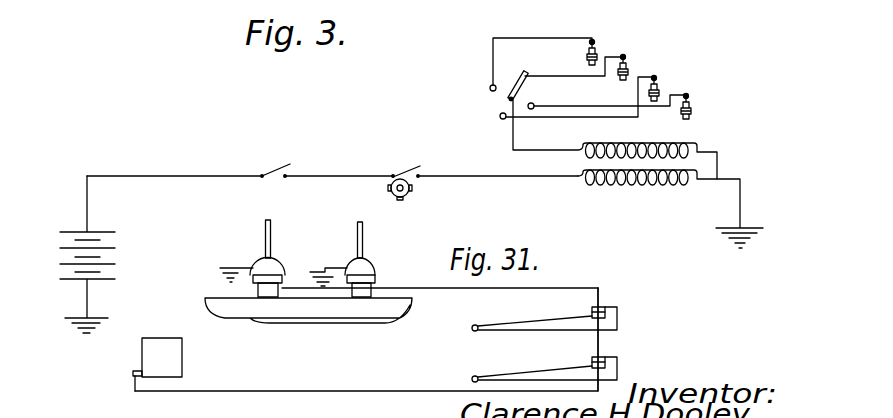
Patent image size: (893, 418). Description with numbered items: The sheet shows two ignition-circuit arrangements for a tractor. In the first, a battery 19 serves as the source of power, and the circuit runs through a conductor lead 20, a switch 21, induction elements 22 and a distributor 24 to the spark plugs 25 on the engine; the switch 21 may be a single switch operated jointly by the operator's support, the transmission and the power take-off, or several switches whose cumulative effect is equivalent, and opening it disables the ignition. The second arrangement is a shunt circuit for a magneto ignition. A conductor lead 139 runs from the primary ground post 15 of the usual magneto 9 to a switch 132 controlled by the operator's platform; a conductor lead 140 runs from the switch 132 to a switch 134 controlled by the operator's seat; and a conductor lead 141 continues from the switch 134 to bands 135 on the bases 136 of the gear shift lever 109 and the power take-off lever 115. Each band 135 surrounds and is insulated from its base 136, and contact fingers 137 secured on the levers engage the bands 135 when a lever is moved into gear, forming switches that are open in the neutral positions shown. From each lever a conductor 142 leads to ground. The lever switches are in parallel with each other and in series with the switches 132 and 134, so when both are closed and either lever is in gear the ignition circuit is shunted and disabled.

In FIG. 3, the magneto 9 is at (173, 353).
In FIG. 3, the primary ground post 15 is at (133, 373).
In FIG. 3, the battery 19 is at (128, 255).
In FIG. 3, the conductor lead 20 is at (173, 174).
In FIG. 3, the switch 21 is at (281, 158).
In FIG. 3, the induction elements 22 is at (584, 158).
In FIG. 3, the distributor 24 is at (480, 112).
In FIG. 3, the spark plugs 25 is at (690, 108).
In FIG. 31, the gear shift lever 109 is at (265, 245).
In FIG. 31, the power take-off lever 115 is at (363, 233).
In FIG. 31, the switch 132 is at (588, 364).
In FIG. 31, the switch 134 is at (588, 312).
In FIG. 31, the band 135 is at (262, 292).
In FIG. 31, the base 136 is at (243, 320).
In FIG. 31, the contact fingers 137 is at (253, 279).
In FIG. 31, the conductor lead 139 is at (296, 390).
In FIG. 31, the conductor lead 140 is at (606, 350).
In FIG. 31, the conductor lead 141 is at (295, 286).
In FIG. 31, the conductor 142 is at (240, 266).